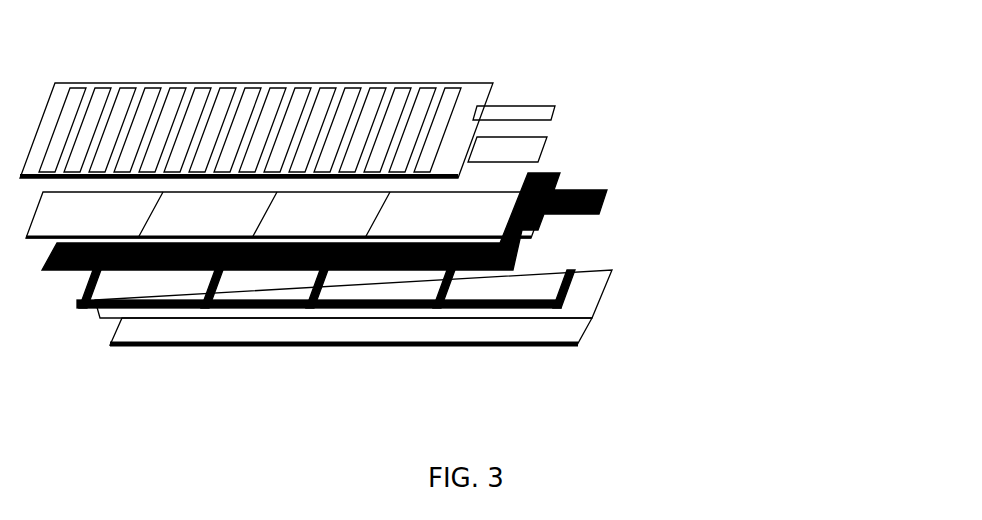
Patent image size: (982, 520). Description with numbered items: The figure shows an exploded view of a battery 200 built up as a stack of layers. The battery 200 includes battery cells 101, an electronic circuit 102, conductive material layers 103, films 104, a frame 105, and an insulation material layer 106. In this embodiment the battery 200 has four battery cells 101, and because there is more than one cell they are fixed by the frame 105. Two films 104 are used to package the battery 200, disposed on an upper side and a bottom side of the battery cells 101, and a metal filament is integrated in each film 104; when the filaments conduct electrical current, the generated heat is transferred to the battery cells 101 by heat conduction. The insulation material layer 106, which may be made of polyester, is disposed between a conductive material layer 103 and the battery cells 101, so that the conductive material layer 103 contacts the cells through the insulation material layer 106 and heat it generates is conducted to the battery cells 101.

The battery 200 is at (277, 42).
The conductive material layer 103 is at (420, 212).
The film 104 is at (498, 174).
The electronic circuit 102 is at (685, 113).
The battery cell 101 is at (457, 172).
The insulation material layer 106 is at (465, 207).
The frame 105 is at (483, 244).